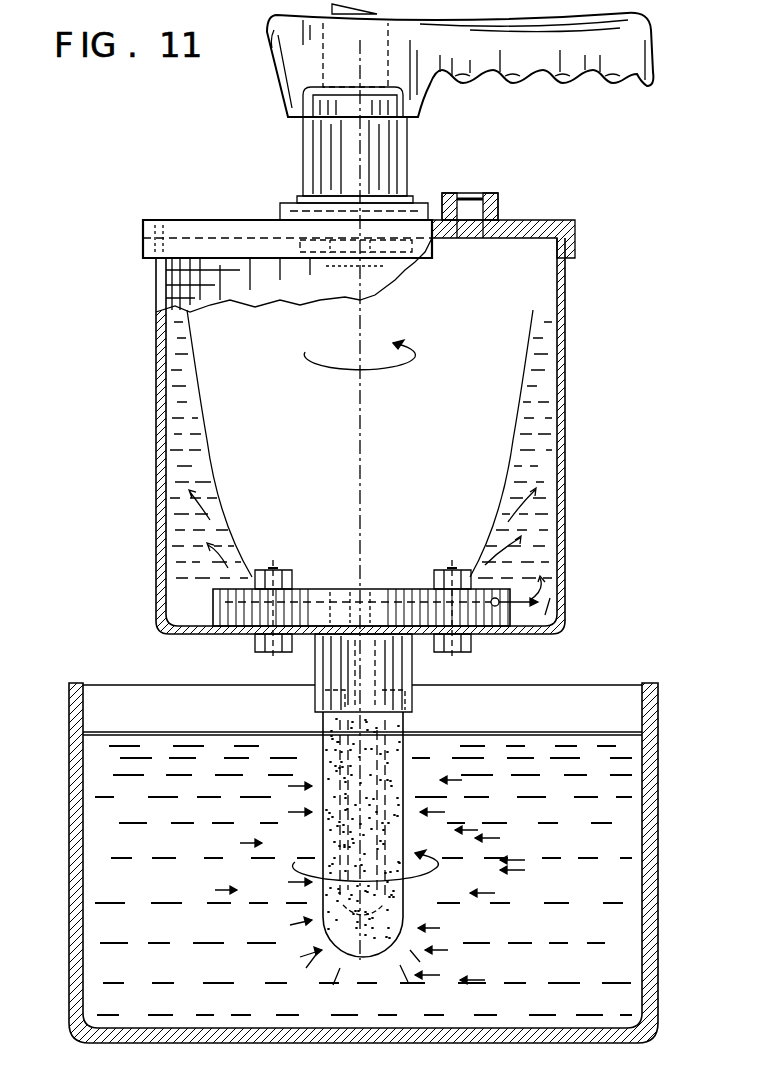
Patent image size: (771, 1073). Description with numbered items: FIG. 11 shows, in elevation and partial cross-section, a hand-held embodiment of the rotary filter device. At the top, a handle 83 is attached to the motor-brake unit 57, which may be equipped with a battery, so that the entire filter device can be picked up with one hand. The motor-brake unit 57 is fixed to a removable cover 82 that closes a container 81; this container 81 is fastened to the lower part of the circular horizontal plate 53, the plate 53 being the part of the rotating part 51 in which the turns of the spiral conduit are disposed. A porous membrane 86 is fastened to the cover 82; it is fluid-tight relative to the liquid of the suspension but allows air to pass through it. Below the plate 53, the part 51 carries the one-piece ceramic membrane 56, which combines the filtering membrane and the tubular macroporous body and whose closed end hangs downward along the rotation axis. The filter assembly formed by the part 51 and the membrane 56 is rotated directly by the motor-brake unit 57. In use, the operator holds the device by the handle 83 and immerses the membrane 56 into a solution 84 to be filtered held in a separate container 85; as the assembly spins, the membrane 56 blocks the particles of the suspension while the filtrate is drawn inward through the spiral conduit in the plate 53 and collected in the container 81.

The part 51 is at (390, 668).
The circular horizontal plate 53 is at (237, 590).
The membrane piece 56 is at (407, 903).
The motor-brake unit 57 is at (345, 157).
The container 81 is at (565, 386).
The removable cover 82 is at (538, 220).
The handle 83 is at (540, 60).
The solution to be filtered 84 is at (566, 740).
The container 85 is at (647, 797).
The porous membrane 86 is at (470, 195).